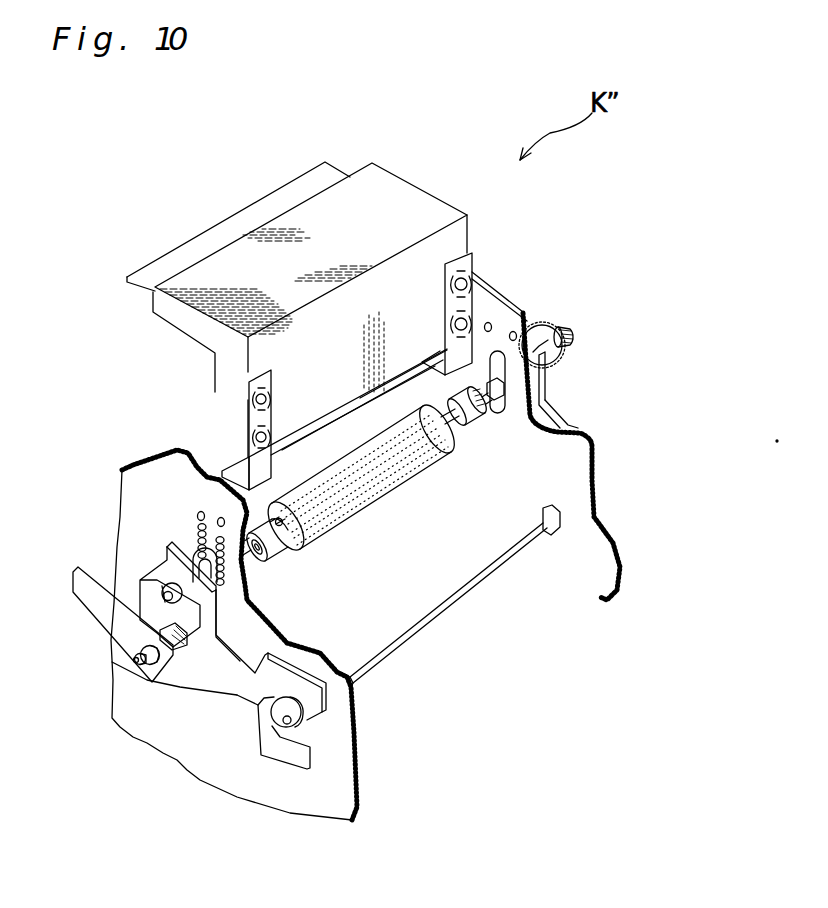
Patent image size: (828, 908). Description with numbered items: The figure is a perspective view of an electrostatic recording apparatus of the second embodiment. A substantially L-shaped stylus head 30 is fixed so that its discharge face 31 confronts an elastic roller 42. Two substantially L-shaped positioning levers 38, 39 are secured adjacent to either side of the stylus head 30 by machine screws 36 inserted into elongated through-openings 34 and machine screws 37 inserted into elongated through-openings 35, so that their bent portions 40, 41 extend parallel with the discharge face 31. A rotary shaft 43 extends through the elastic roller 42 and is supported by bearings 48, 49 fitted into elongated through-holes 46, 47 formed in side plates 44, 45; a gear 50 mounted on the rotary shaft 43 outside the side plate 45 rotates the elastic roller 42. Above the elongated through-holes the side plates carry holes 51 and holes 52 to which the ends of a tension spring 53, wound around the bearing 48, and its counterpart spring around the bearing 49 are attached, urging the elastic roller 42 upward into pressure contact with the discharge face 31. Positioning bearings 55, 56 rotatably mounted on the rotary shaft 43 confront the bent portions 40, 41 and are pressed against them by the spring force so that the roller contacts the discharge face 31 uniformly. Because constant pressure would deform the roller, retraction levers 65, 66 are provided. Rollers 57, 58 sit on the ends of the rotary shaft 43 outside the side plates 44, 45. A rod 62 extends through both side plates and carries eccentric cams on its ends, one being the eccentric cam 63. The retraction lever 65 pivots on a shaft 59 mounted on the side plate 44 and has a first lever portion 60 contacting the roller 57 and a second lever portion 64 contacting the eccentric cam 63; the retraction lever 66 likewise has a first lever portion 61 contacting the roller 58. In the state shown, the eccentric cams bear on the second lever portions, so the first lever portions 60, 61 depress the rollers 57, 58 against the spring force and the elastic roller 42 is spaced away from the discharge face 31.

The stylus head 30 is at (172, 322).
The discharge face 31 is at (340, 414).
The elongated through-openings 34 is at (248, 387).
The elongated through-openings 35 is at (478, 272).
The machine screws 36 is at (270, 400).
The machine screws 37 is at (452, 323).
The positioning lever 38 is at (273, 372).
The positioning lever 39 is at (470, 262).
The bent portion 40 is at (240, 472).
The bent portion 41 is at (430, 367).
The elastic roller 42 is at (373, 494).
The rotary shaft 43 is at (243, 550).
The side plate 44 is at (127, 487).
The side plate 45 is at (580, 470).
The elongated through-hole 46 is at (213, 544).
The elongated through-hole 47 is at (505, 396).
The bearing 48 is at (172, 547).
The bearing 49 is at (510, 394).
The gear 50 is at (558, 365).
The holes 51 is at (220, 514).
The holes 52 is at (515, 330).
The tension spring 53 is at (200, 521).
The positioning bearing 55 is at (272, 544).
The positioning bearing 56 is at (477, 418).
The roller 57 is at (163, 581).
The roller 58 is at (567, 333).
The shaft 59 is at (135, 660).
The first lever portion 60 is at (168, 567).
The first lever portion 61 is at (538, 387).
The rod 62 is at (462, 594).
The eccentric cam 63 is at (292, 705).
The second lever portion 64 is at (303, 690).
The retraction lever 65 is at (205, 678).
The retraction lever 66 is at (557, 422).